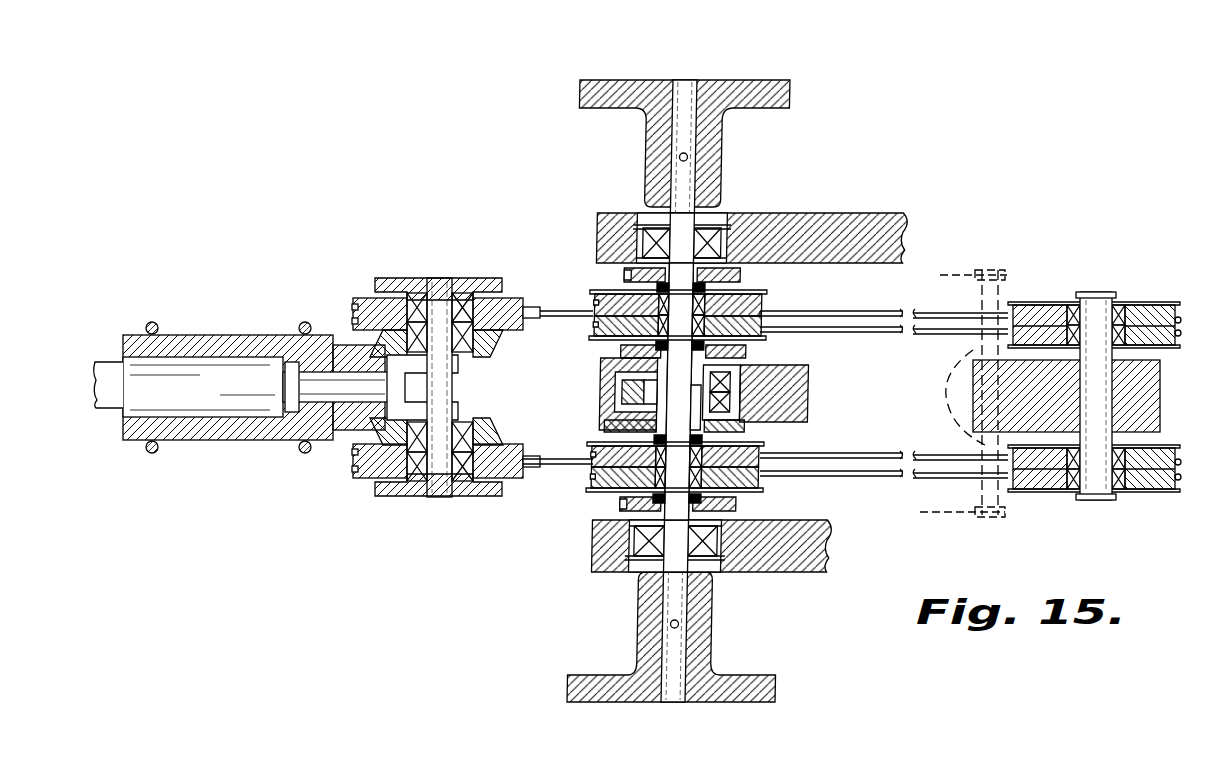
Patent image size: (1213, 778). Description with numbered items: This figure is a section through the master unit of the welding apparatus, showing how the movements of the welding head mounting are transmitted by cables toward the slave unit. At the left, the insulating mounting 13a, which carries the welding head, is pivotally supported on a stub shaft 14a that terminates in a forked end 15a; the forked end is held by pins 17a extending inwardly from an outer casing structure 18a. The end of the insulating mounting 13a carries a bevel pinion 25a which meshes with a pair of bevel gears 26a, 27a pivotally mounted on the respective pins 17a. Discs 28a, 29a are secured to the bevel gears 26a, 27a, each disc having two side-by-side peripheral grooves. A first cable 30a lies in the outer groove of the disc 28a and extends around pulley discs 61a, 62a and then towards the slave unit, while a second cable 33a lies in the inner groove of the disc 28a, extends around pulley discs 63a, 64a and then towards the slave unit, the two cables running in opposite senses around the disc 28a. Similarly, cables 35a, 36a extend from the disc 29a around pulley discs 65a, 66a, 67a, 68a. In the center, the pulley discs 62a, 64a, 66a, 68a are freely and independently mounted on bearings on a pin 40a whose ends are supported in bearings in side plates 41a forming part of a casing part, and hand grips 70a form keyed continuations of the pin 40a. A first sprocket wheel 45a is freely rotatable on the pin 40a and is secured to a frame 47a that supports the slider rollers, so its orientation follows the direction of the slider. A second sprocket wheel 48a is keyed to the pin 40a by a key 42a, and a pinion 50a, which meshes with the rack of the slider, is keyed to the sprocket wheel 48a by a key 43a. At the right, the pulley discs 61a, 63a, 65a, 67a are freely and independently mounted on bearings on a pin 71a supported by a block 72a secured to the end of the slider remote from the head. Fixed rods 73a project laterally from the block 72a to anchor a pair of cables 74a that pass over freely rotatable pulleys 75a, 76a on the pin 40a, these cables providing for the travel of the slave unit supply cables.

The insulating mounting 13a is at (172, 440).
The stub shaft 14a is at (315, 400).
The forked end 15a is at (455, 402).
The pins 17a is at (440, 292).
The outer casing structure 18a is at (395, 280).
The bevel pinion 25a is at (375, 345).
The bevel gear 26a is at (490, 345).
The bevel gear 27a is at (480, 440).
The disc 28a is at (510, 305).
The disc 29a is at (368, 470).
The first cable 30a is at (355, 307).
The second cable 33a is at (355, 322).
The cable 35a is at (352, 470).
The cable 36a is at (352, 452).
The pin 40a is at (680, 262).
The side plates 41a is at (762, 232).
The key 42a is at (745, 425).
The key 43a is at (638, 395).
The first sprocket wheel 45a is at (605, 355).
The frame 47a is at (795, 392).
The second sprocket wheel 48a is at (605, 420).
The pinion 50a is at (735, 378).
The pulley disc 61a is at (1150, 312).
The pulley disc 62a is at (738, 305).
The pulley disc 63a is at (1160, 345).
The pulley disc 64a is at (748, 325).
The pulley disc 65a is at (1165, 492).
The pulley disc 66a is at (735, 490).
The pulley disc 67a is at (1135, 470).
The pulley disc 68a is at (755, 457).
The hand grips 70a is at (745, 92).
The pin 71a is at (1098, 295).
The block 72a is at (1140, 418).
The fixed rods 73a is at (950, 397).
The cables 74a is at (975, 275).
The pulley 75a is at (625, 278).
The pulley 76a is at (625, 497).